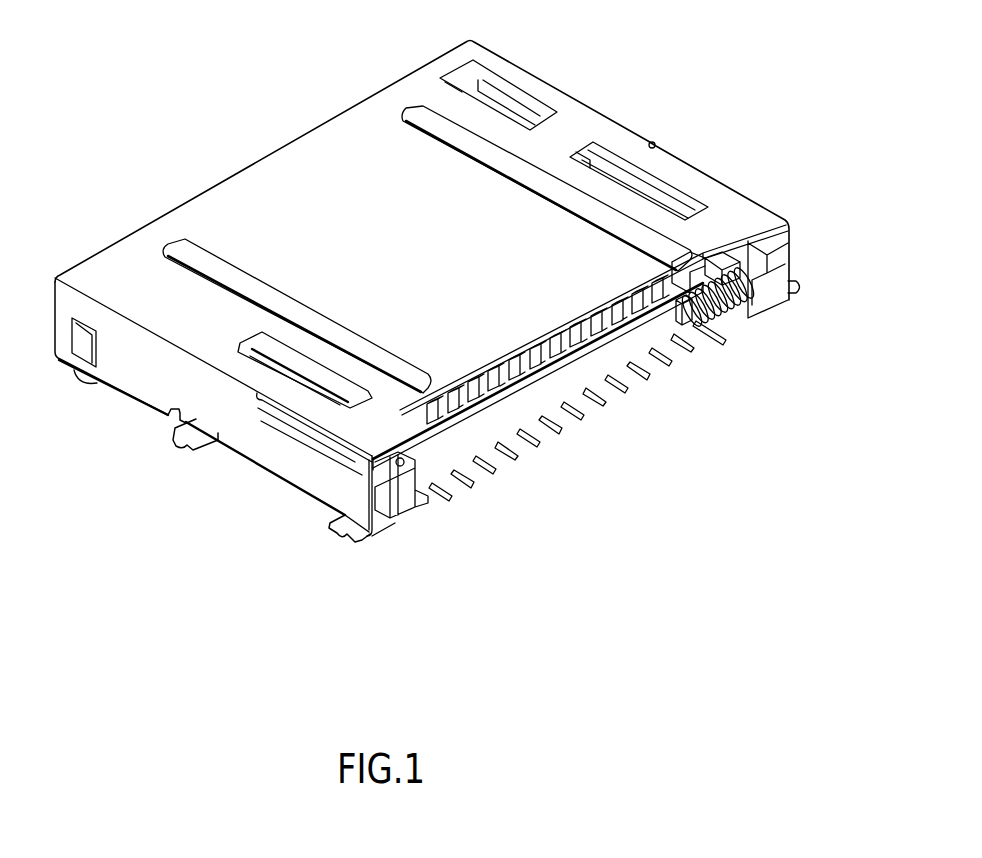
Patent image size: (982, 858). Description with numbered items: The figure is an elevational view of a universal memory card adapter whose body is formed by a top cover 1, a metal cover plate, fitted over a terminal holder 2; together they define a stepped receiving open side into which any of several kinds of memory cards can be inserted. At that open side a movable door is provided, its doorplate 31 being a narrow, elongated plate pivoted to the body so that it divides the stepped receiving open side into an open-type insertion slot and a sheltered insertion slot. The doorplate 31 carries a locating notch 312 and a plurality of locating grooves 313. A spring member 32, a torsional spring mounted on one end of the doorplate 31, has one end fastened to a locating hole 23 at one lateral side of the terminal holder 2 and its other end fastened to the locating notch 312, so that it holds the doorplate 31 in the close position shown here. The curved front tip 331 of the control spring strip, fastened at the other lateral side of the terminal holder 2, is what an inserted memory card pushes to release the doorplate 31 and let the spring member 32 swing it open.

The top cover 1 is at (283, 172).
The terminal holder 2 is at (770, 292).
The locating hole 23 is at (717, 270).
The doorplate 31 is at (568, 383).
The locating notch 312 is at (668, 295).
The locating grooves 313 is at (613, 335).
The spring member 32 is at (730, 308).
The curved front tip 331 is at (398, 476).